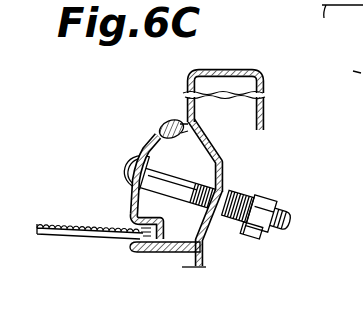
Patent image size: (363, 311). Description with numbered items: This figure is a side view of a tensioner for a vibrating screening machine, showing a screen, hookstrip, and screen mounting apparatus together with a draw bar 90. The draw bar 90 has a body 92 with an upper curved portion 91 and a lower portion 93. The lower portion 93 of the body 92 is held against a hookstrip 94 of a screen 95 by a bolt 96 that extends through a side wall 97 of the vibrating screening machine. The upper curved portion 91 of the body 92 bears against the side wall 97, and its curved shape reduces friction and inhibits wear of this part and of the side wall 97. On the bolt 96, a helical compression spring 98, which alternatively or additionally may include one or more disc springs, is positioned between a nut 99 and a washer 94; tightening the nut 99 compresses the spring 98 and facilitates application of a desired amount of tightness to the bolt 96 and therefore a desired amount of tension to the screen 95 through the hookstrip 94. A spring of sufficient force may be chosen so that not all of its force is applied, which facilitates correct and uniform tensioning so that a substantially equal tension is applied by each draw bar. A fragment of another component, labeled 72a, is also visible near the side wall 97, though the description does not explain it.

The frame member 72a is at (360, 40).
The draw bar 90 is at (119, 164).
The upper curved portion 91 is at (166, 122).
The body 92 is at (152, 138).
The lower portion 93 is at (152, 254).
The hookstrip 94 is at (212, 218).
The screen 95 is at (65, 224).
The bolt 96 is at (131, 166).
The side wall 97 is at (186, 94).
The helical compression spring 98 is at (238, 185).
The nut 99 is at (272, 199).